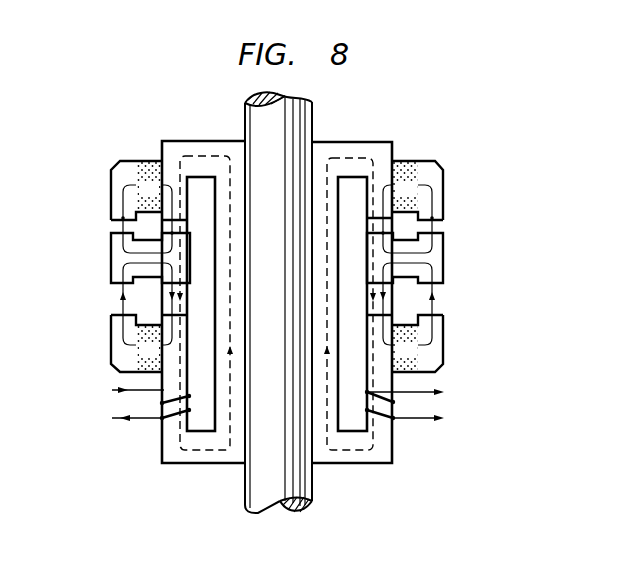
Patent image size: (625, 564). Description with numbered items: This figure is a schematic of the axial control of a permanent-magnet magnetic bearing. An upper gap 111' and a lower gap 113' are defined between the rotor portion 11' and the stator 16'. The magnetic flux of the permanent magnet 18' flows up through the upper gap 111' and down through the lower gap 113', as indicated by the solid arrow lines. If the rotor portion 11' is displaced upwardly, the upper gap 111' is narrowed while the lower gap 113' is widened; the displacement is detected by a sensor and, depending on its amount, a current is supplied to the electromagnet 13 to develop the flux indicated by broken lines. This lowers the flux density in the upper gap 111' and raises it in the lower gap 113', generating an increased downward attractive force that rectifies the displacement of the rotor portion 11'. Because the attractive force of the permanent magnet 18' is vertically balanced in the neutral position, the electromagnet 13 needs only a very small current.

The stator 16' is at (285, 279).
The permanent magnet 18' is at (303, 245).
The upper gap 111' is at (313, 210).
The rotor portion 11' is at (306, 258).
The lower gap 113' is at (311, 314).
The electromagnet 13 is at (147, 422).